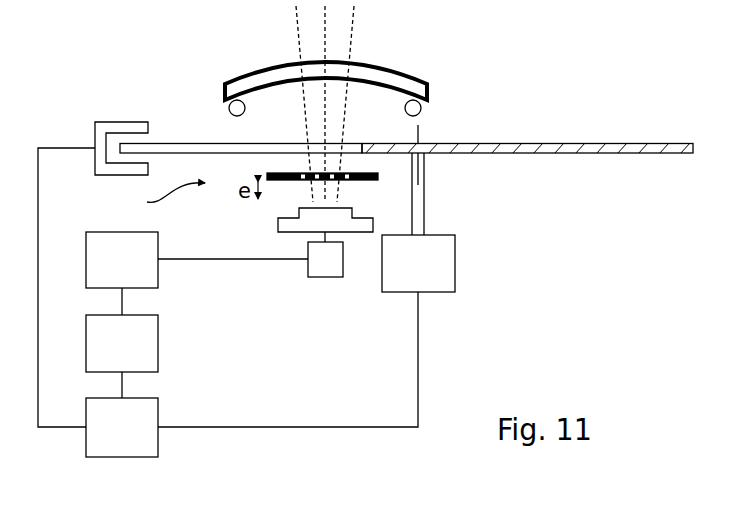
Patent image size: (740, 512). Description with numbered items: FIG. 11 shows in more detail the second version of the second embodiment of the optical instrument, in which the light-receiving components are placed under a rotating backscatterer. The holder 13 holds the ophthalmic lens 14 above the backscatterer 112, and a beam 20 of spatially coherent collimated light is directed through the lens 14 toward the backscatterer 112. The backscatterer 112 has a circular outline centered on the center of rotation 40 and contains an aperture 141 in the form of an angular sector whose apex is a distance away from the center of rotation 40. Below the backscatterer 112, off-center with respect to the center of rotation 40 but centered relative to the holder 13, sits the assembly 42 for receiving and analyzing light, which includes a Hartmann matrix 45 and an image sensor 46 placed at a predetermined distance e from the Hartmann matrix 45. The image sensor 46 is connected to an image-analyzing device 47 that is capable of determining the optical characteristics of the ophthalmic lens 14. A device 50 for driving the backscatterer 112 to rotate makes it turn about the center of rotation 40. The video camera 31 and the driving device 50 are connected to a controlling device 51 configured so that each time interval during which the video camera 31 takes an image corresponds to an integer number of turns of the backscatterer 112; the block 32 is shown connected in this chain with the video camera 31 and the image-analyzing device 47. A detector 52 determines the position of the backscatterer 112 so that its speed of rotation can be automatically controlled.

The ophthalmic lens 14 is at (258, 80).
The holder 13 is at (230, 110).
The beam 20 is at (345, 26).
The aperture 141 is at (163, 145).
The backscatterer 112 is at (560, 145).
The detector 52 is at (97, 130).
The assembly for receiving and analyzing light 42 is at (161, 193).
The Hartmann matrix 45 is at (378, 178).
The image sensor 46 is at (357, 225).
The image-analyzing device 47 is at (323, 270).
The center of rotation 40 is at (420, 148).
The device for driving the backscatterer to rotate 50 is at (306, 331).
The control module 32 is at (197, 273).
The video camera 31 is at (122, 356).
The controlling device 51 is at (122, 427).